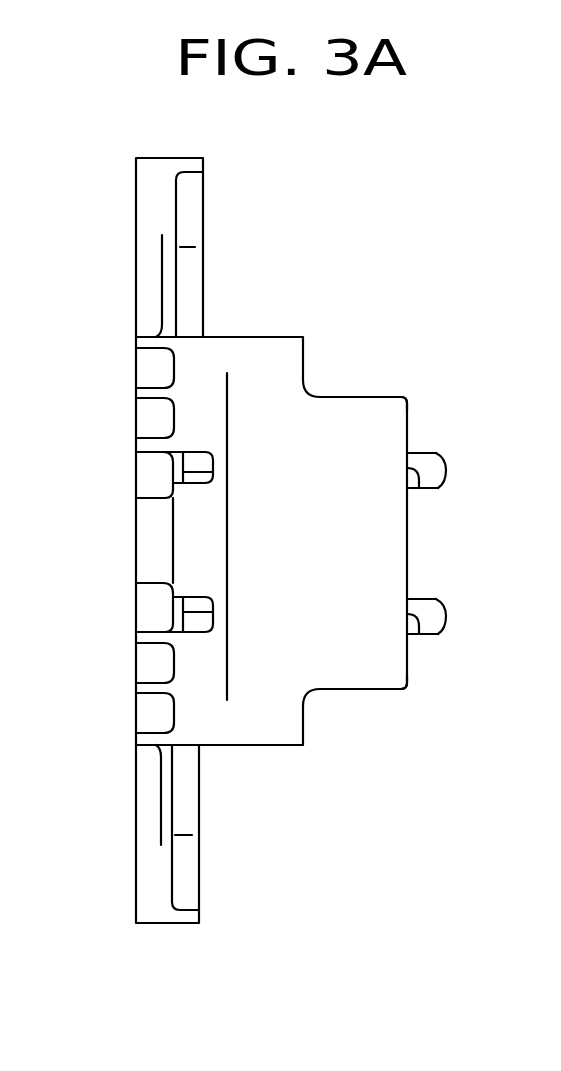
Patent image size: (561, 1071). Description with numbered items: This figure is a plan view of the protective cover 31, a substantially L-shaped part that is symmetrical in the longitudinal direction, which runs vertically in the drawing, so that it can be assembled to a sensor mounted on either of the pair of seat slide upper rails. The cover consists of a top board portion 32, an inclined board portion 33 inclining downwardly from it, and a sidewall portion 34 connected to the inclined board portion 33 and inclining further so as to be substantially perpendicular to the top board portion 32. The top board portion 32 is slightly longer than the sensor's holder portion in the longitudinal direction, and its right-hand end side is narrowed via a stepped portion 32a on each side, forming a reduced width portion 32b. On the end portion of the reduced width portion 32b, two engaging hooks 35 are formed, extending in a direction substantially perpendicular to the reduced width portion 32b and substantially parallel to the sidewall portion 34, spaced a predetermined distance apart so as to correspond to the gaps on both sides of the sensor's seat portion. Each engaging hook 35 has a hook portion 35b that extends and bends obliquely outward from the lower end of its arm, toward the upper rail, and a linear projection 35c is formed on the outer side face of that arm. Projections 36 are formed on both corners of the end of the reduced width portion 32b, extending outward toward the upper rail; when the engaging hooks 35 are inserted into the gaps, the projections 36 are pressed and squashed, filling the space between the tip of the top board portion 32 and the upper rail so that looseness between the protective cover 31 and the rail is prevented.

The protective cover 31 is at (334, 274).
The top board portion 32 is at (272, 339).
The stepped portion 32a is at (304, 350).
The reduced width portion 32b is at (365, 678).
The inclined board portion 33 is at (207, 337).
The sidewall portion 34 is at (135, 390).
The engaging hook 35 is at (432, 453).
The hook portion 35b is at (446, 470).
The linear projection 35c is at (419, 488).
The projection 36 is at (408, 399).